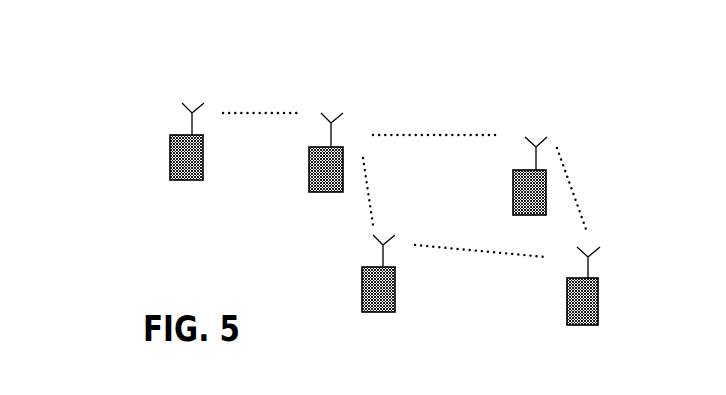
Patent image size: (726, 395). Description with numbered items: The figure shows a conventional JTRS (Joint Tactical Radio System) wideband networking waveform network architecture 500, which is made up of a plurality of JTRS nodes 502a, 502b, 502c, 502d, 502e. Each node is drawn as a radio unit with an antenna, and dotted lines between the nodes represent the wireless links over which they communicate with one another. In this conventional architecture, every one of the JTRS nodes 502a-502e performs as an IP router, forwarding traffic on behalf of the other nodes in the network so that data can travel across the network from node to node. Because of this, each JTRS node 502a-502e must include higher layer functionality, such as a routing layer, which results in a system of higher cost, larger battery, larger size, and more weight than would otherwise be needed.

The JTRS network architecture 500 is at (547, 82).
The JTRS node 502a is at (170, 168).
The JTRS node 502b is at (309, 168).
The JTRS node 502c is at (395, 302).
The JTRS node 502d is at (513, 192).
The JTRS node 502e is at (598, 298).